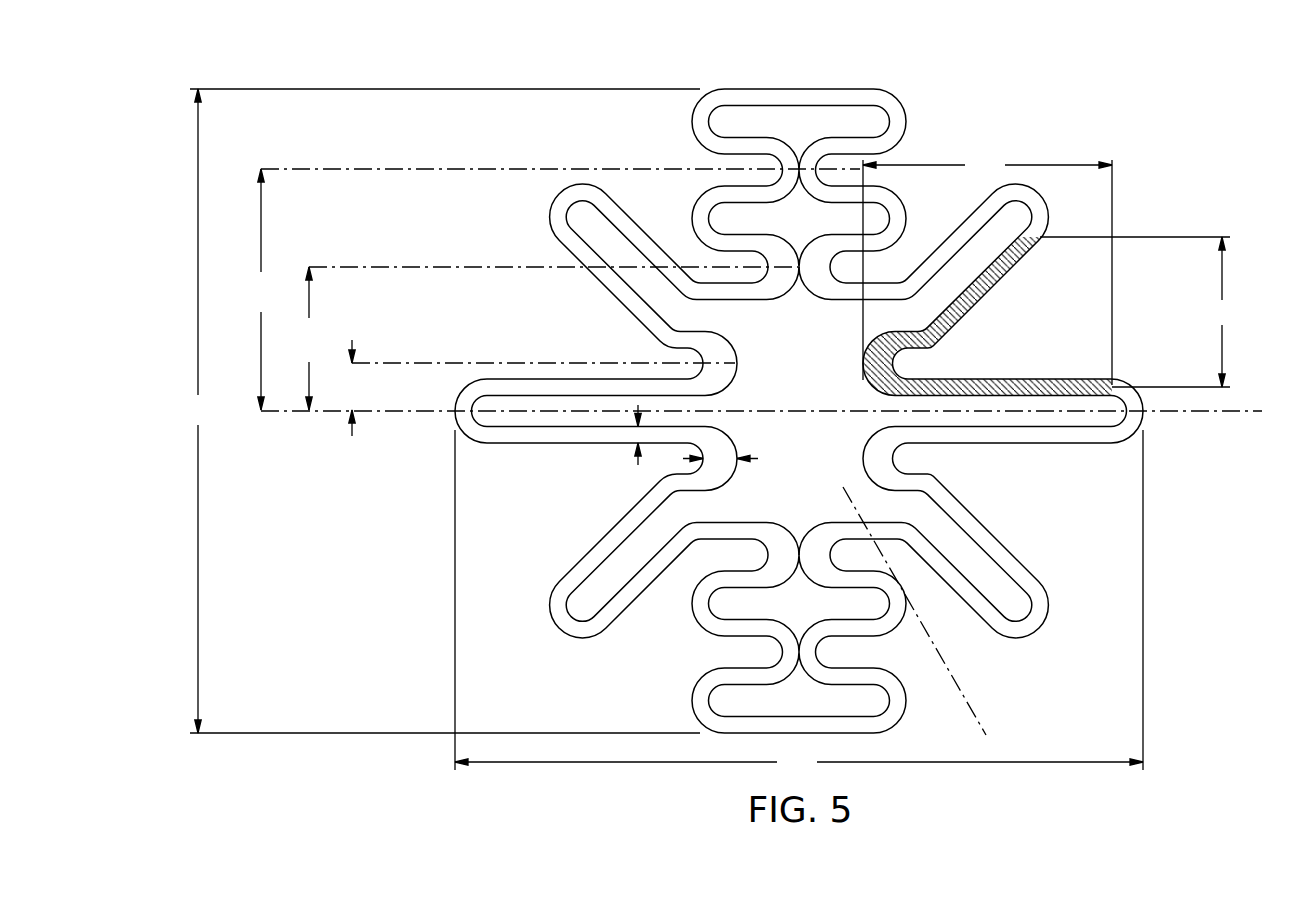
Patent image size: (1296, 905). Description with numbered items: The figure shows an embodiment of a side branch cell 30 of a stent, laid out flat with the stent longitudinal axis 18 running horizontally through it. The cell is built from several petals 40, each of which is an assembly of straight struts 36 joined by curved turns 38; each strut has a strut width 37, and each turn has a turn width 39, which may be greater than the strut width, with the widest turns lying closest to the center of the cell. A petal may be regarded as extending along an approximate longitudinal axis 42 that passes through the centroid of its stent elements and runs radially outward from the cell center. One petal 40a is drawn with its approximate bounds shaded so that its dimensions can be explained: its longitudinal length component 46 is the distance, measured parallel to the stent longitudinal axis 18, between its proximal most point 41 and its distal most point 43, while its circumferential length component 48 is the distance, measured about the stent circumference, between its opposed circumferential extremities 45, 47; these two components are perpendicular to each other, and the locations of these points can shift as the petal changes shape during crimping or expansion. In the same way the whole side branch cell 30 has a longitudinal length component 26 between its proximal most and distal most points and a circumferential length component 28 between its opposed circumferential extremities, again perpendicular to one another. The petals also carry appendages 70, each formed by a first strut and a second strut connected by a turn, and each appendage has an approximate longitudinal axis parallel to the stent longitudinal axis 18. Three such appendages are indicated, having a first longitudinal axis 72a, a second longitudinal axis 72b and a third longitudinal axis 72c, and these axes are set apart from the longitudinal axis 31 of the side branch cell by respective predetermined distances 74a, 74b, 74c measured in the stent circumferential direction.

The side branch cell 30 is at (1120, 120).
The longitudinal axis of the stent 18 is at (1250, 411).
The longitudinal length component of the side branch cell 26 is at (799, 603).
The circumferential length component of the side branch cell 28 is at (440, 411).
The longitudinal axis of the side branch cell 31 is at (510, 414).
The strut 36 is at (915, 492).
The strut width 37 is at (622, 441).
The turn 38 is at (836, 554).
The turn width 39 is at (718, 468).
The petal 40 is at (840, 523).
The petal 40a is at (864, 358).
The proximal most point 41 is at (1122, 379).
The longitudinal axis of the petal 42 is at (978, 697).
The distal most point 43 is at (866, 372).
The circumferential extremity 45 is at (1020, 379).
The longitudinal length component of the petal 46 is at (987, 268).
The circumferential extremity 47 is at (1040, 232).
The circumferential length component of the petal 48 is at (1139, 312).
The appendage 70 is at (688, 330).
The first longitudinal axis 72a is at (650, 363).
The second longitudinal axis 72b is at (705, 267).
The third longitudinal axis 72c is at (705, 170).
The predetermined distance 74a is at (351, 388).
The predetermined distance 74b is at (309, 338).
The predetermined distance 74c is at (261, 289).